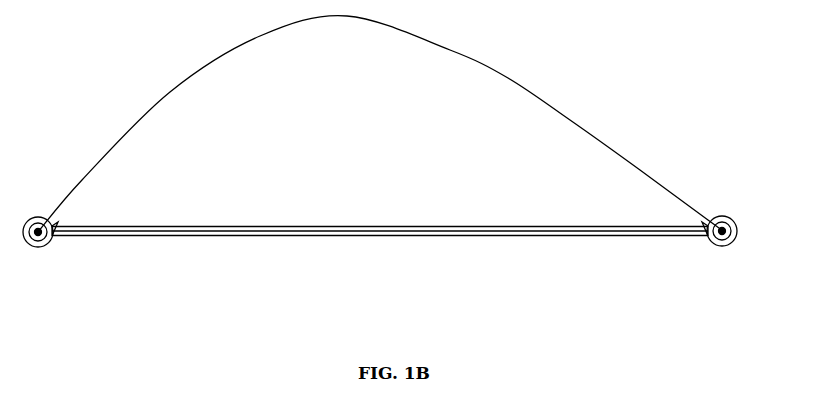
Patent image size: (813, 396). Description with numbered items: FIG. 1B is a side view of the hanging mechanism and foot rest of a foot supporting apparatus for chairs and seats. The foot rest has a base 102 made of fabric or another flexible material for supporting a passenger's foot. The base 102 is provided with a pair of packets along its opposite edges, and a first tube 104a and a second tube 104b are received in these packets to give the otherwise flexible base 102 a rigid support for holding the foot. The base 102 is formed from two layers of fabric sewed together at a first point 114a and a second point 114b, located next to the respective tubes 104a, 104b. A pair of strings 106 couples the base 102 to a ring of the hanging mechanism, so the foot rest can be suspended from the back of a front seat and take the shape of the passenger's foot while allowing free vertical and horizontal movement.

The base 102 is at (385, 224).
The first tube 104a is at (732, 212).
The second tube 104b is at (40, 247).
The strings 106 is at (508, 78).
The first point 114a is at (690, 238).
The second point 114b is at (55, 224).